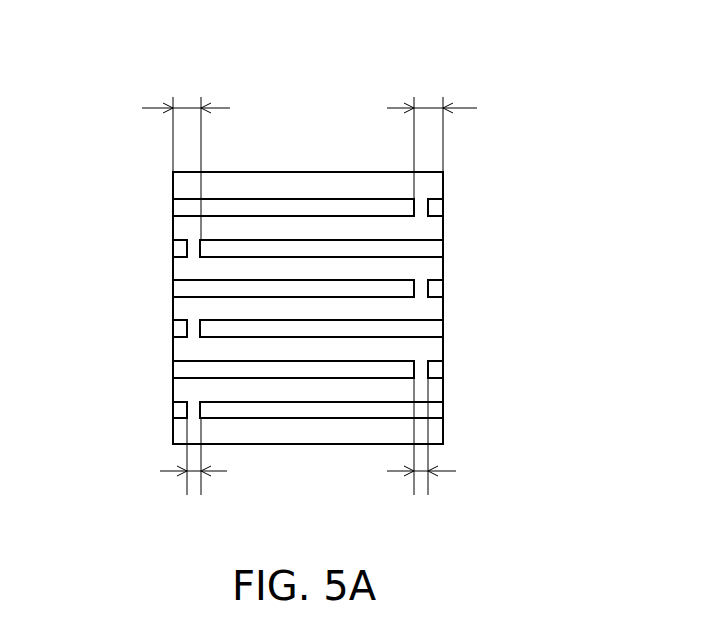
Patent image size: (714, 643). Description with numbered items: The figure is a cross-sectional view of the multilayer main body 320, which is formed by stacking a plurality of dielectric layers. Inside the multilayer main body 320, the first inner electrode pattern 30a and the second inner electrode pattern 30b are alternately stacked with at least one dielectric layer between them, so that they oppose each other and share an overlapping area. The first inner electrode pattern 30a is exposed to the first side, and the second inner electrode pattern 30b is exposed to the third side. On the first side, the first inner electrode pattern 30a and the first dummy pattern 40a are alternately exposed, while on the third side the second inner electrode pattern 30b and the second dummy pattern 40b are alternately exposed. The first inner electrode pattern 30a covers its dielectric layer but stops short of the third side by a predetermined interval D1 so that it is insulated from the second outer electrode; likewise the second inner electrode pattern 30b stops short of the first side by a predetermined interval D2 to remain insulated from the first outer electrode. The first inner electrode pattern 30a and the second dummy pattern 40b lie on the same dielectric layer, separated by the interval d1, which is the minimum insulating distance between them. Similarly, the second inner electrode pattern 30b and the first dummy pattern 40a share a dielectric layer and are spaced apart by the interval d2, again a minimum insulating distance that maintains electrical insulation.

The multilayer main body 320 is at (322, 170).
The first inner electrode pattern 30a is at (182, 210).
The second inner electrode pattern 30b is at (435, 249).
The first dummy pattern 40a is at (178, 249).
The second dummy pattern 40b is at (435, 208).
The interval D2 is at (186, 156).
The interval D1 is at (432, 136).
The interval d2 is at (193, 470).
The interval d1 is at (421, 450).